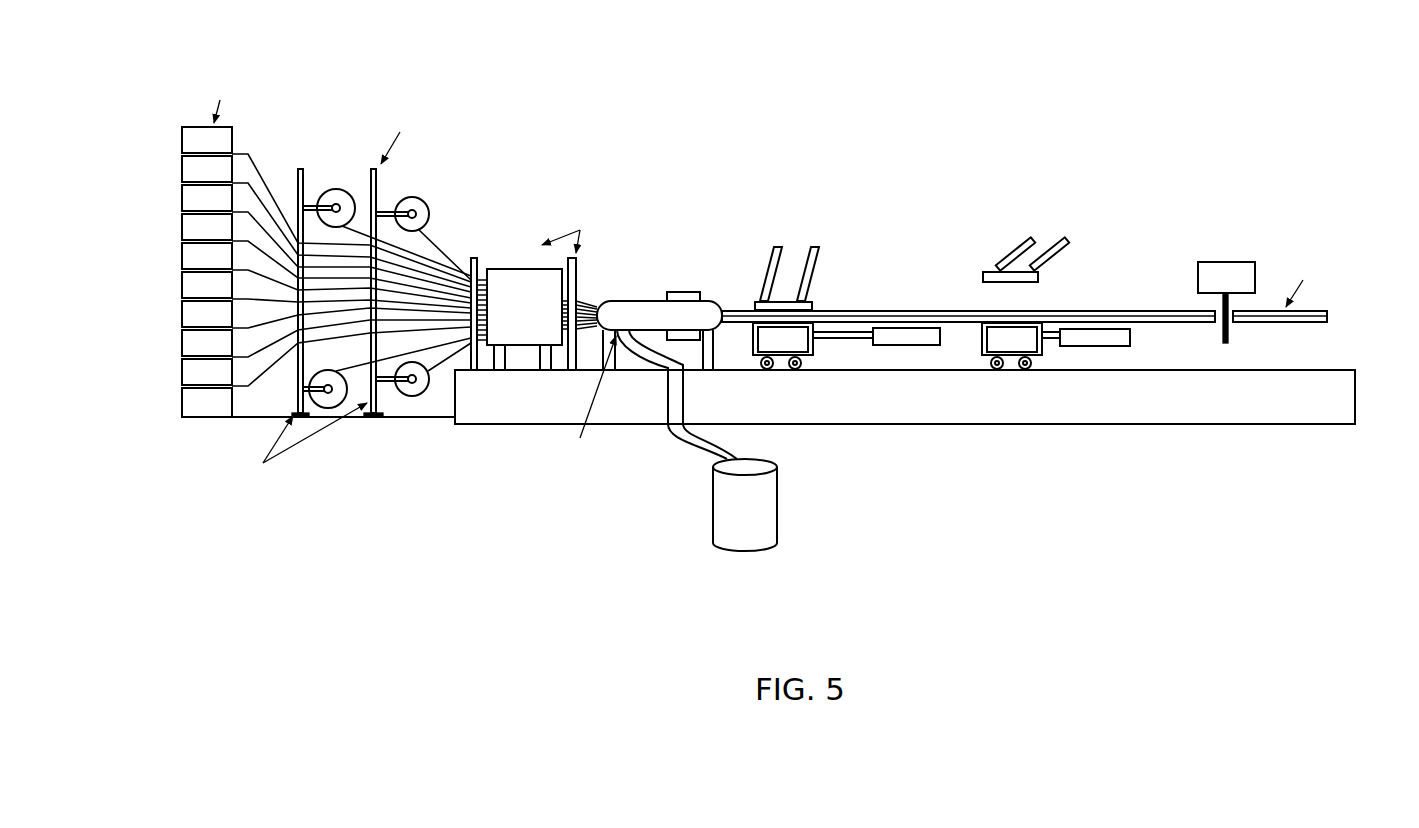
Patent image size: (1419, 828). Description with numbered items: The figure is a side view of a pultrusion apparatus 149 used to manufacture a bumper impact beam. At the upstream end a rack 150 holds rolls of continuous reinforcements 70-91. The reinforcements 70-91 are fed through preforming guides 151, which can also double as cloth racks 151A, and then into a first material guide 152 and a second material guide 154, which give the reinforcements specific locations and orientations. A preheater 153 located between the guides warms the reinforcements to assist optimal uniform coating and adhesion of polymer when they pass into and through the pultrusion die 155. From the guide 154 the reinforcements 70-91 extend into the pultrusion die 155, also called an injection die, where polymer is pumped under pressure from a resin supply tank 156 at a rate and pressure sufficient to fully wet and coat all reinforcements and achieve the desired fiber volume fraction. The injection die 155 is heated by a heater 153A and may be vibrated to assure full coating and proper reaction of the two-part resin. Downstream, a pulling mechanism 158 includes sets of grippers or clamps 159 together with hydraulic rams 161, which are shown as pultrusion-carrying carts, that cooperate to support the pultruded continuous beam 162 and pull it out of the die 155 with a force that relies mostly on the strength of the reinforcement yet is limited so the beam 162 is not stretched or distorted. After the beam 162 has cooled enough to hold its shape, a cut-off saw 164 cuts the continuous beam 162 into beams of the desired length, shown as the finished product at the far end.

The pultrusion apparatus 149 is at (877, 92).
The rack 150 is at (178, 166).
The continuous reinforcements 70-91 is at (264, 161).
The cloth racks 151A is at (342, 217).
The preforming guides 151 is at (295, 402).
The material guide 152 is at (478, 262).
The preheater 153 is at (527, 278).
The heater 153A is at (700, 296).
The material guide 154 is at (578, 272).
The pultrusion die 155 is at (634, 308).
The resin supply tank 156 is at (720, 507).
The pulling mechanism 158 is at (954, 199).
The grippers/clamps 159 is at (812, 278).
The hydraulic rams 161 is at (816, 350).
The pultruded continuous beam 162 is at (1093, 313).
The cut-off saw 164 is at (1253, 275).